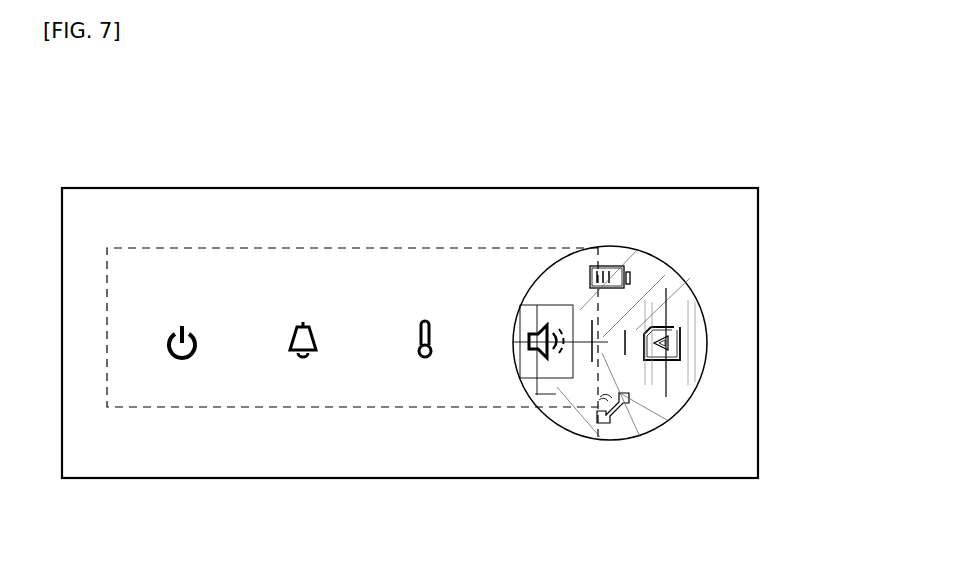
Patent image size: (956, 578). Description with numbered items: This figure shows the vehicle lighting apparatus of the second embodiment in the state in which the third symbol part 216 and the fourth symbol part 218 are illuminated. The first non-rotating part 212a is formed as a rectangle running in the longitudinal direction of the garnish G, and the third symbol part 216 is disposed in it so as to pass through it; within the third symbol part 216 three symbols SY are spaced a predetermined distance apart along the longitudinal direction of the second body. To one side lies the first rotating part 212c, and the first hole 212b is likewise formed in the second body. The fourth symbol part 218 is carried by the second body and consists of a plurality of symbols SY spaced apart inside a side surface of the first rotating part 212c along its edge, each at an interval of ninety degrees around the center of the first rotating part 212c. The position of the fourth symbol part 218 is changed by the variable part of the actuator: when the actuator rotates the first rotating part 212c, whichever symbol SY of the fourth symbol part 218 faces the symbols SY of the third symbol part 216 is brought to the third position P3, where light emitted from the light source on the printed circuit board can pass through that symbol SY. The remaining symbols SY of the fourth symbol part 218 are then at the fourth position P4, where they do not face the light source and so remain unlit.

The garnish G is at (92, 188).
The third symbol part 216 is at (433, 130).
The symbol SY is at (181, 325).
The third position P3 is at (521, 295).
The fourth position P4 is at (633, 244).
The first non-rotating part 212a is at (253, 407).
The first hole 212b is at (642, 426).
The first rotating part 212c is at (652, 280).
The fourth symbol part 218 is at (651, 383).